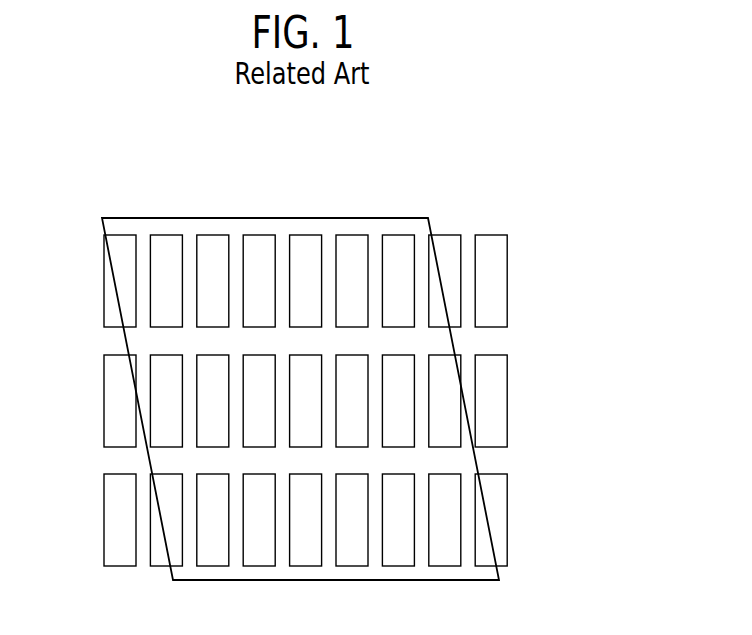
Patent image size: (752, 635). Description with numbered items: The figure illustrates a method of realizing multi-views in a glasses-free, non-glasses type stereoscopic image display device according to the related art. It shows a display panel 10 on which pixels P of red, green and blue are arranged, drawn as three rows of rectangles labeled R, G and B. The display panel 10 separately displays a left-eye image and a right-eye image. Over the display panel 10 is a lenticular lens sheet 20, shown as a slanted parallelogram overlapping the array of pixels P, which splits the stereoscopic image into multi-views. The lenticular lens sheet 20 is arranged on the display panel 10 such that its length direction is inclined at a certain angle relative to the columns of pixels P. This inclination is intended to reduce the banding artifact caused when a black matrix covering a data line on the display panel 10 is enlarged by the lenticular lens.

The display panel 10 is at (340, 366).
The pixel P is at (507, 295).
The lenticular lens sheet 20 is at (102, 218).